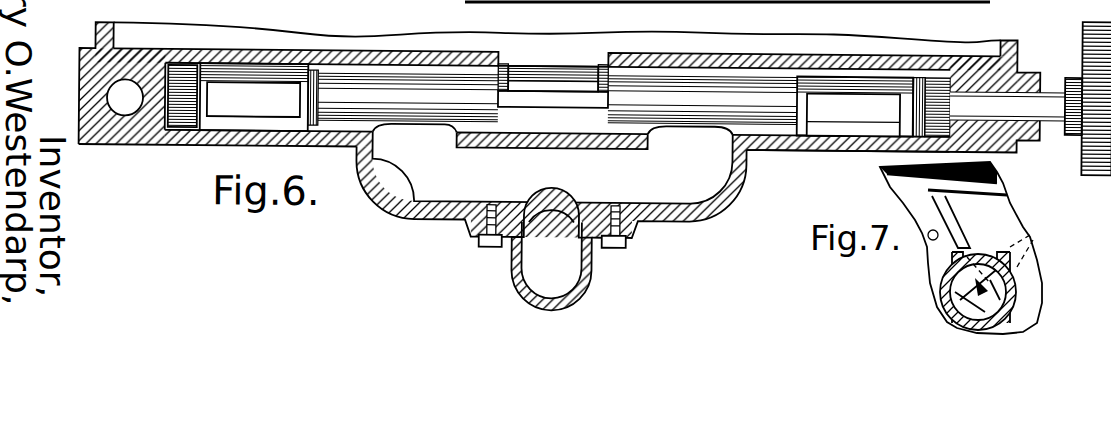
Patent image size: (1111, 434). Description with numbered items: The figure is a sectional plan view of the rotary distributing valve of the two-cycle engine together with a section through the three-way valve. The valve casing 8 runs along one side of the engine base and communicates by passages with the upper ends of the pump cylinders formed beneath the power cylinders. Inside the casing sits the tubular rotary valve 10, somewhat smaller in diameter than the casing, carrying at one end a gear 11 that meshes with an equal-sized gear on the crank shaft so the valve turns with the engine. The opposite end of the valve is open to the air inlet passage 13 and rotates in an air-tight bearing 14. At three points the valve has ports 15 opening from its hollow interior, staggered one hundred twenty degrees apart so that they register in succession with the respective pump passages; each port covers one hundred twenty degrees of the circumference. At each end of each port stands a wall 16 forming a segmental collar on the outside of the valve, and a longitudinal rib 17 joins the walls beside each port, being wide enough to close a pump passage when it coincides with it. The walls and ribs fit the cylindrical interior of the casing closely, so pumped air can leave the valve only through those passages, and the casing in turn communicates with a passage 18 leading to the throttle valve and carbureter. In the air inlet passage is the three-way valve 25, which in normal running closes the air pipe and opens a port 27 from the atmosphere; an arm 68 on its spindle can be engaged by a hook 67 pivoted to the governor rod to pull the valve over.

In FIG. 6, the valve casing 8 is at (385, 52).
In FIG. 6, the rotary valve 10 is at (419, 110).
In FIG. 6, the gear 11 is at (1082, 38).
In FIG. 6, the air inlet passage 13 is at (125, 106).
In FIG. 6, the air-tight bearing 14 is at (185, 122).
In FIG. 6, the ports 15 is at (260, 104).
In FIG. 6, the wall 16 is at (503, 58).
In FIG. 6, the longitudinal rib 17 is at (553, 97).
In FIG. 6, the passage 18 is at (551, 248).
In FIG. 7, the three-way valve 25 is at (955, 292).
In FIG. 7, the port 27 is at (1012, 296).
In FIG. 7, the hook 67 is at (910, 180).
In FIG. 7, the arm 68 is at (948, 221).